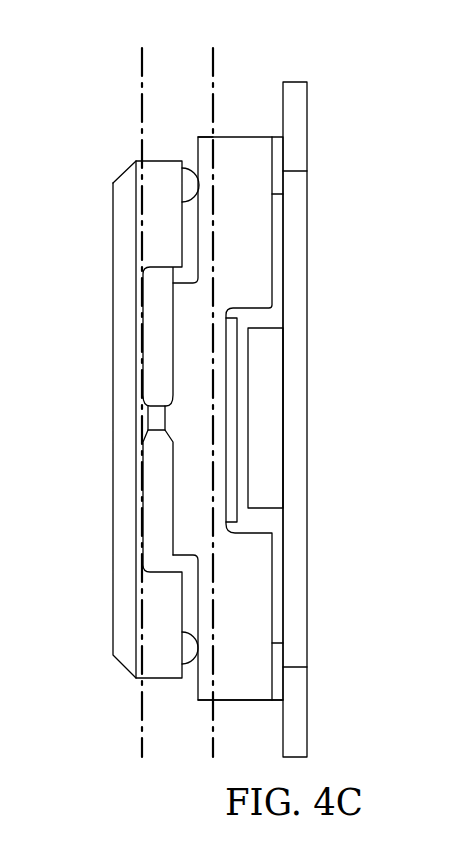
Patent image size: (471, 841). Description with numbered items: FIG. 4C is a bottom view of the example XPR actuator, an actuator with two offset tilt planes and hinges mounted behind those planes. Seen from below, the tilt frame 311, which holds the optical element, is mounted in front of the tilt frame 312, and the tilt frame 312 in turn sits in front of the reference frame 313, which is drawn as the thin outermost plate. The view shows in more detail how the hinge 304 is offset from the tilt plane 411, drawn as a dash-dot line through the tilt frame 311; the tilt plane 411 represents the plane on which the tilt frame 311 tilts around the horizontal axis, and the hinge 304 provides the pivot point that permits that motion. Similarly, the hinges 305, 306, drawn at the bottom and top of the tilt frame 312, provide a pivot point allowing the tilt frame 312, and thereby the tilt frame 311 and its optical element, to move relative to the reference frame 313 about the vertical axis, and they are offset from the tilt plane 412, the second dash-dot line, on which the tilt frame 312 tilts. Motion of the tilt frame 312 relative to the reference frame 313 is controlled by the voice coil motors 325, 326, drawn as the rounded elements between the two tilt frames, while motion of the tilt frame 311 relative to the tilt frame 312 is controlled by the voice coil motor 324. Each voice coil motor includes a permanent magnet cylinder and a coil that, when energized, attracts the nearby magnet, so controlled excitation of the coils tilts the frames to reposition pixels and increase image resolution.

The hinge 304 is at (150, 420).
The hinge 305 is at (240, 703).
The hinge 306 is at (207, 137).
The tilt frame 311 is at (113, 352).
The tilt frame 312 is at (240, 137).
The reference frame 313 is at (292, 81).
The voice coil motor 324 is at (277, 418).
The voice coil motor 325 is at (188, 657).
The voice coil motor 326 is at (188, 172).
The tilt plane 411 is at (142, 705).
The tilt plane 412 is at (215, 72).